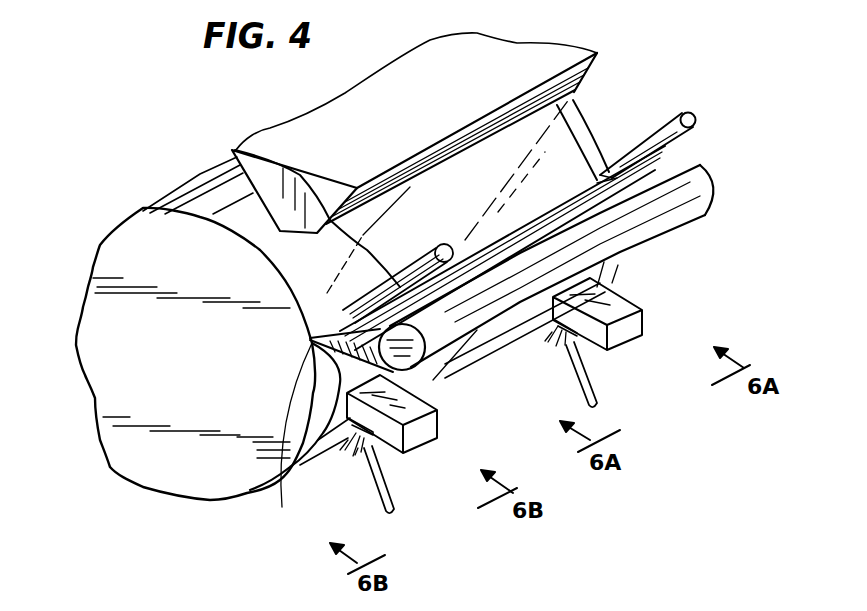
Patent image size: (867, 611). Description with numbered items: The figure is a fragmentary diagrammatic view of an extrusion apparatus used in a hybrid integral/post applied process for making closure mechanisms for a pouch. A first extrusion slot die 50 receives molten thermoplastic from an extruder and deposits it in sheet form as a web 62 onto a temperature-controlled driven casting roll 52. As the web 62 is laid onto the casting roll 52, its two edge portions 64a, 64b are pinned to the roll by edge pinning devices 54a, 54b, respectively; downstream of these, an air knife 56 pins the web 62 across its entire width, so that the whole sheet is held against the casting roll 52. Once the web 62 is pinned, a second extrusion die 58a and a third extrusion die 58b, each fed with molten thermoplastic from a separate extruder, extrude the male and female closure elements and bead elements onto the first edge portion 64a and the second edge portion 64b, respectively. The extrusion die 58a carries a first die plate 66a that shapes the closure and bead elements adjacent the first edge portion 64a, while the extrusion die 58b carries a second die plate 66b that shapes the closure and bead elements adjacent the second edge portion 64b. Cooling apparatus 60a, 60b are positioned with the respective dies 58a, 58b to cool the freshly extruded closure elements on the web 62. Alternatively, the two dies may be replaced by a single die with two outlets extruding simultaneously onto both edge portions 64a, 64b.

The first extrusion slot die 50 is at (590, 70).
The temperature-controlled driven casting roll 52 is at (140, 383).
The edge pinning device 54a is at (253, 137).
The edge pinning device 54b is at (677, 137).
The air knife 56 is at (710, 193).
The second extrusion die 58a is at (437, 405).
The third extrusion die 58b is at (633, 303).
The cooling apparatus 60a is at (388, 485).
The cooling apparatus 60b is at (595, 377).
The web 62 is at (461, 207).
The first edge portion 64a is at (295, 438).
The second edge portion 64b is at (565, 158).
The first die plate 66a is at (345, 440).
The second die plate 66b is at (557, 325).